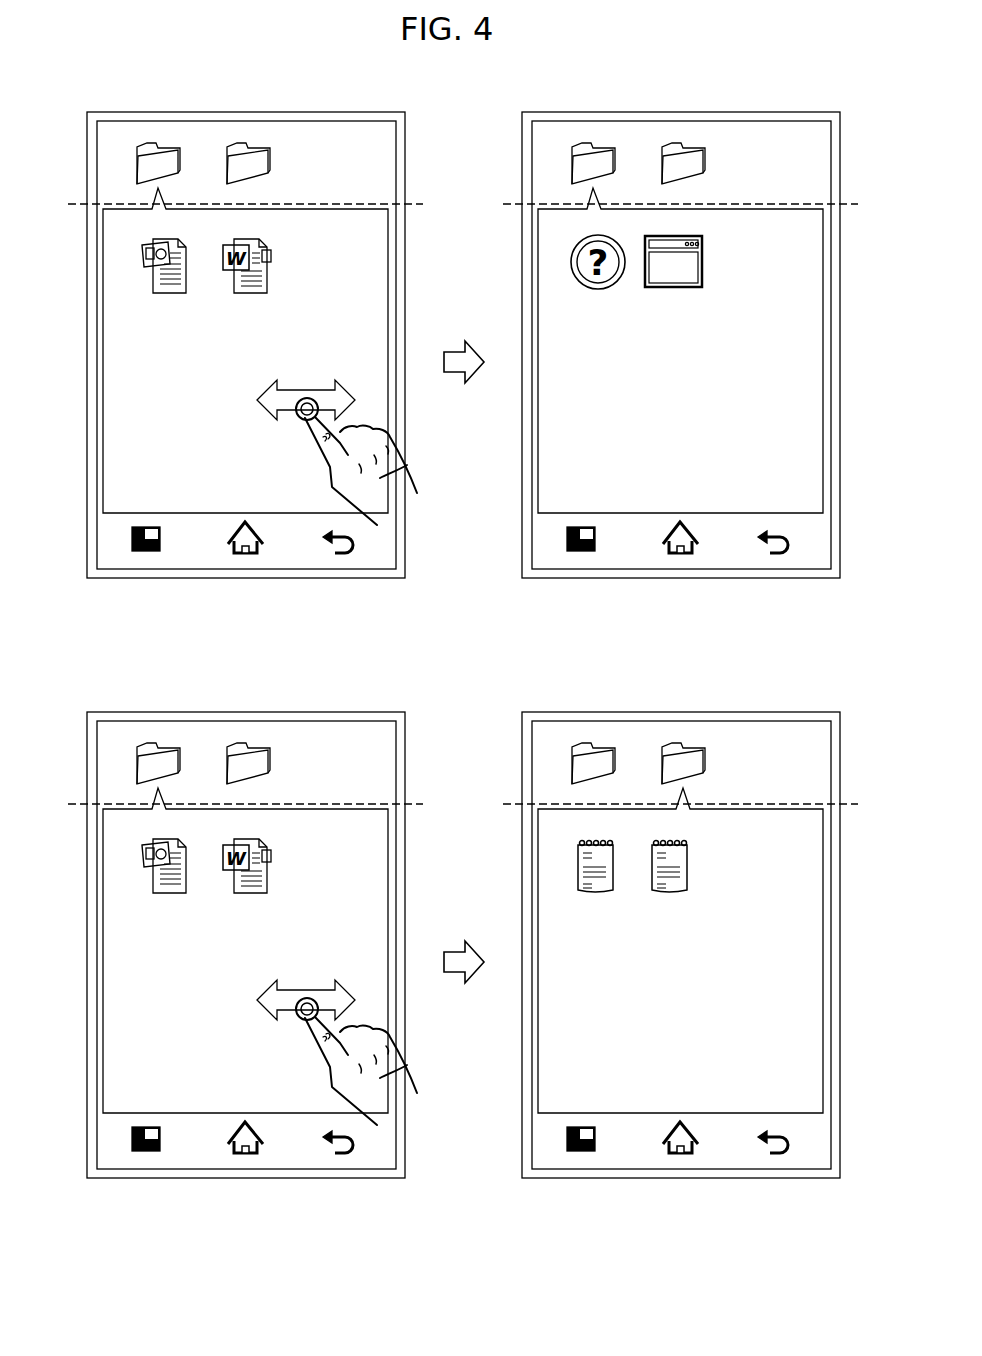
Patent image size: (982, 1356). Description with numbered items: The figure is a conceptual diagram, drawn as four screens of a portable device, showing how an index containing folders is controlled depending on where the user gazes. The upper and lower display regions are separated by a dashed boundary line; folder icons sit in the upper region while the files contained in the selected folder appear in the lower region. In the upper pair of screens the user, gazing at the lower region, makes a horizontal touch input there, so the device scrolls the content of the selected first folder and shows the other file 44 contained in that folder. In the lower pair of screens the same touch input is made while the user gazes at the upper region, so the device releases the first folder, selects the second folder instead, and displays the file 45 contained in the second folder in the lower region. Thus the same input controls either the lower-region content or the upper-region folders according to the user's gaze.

The other file 44 is at (545, 273).
The file 45 is at (576, 877).